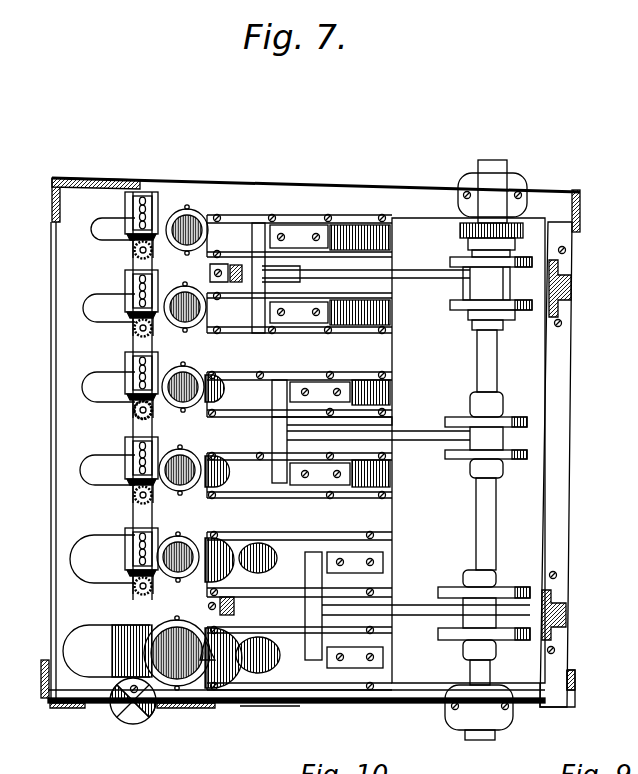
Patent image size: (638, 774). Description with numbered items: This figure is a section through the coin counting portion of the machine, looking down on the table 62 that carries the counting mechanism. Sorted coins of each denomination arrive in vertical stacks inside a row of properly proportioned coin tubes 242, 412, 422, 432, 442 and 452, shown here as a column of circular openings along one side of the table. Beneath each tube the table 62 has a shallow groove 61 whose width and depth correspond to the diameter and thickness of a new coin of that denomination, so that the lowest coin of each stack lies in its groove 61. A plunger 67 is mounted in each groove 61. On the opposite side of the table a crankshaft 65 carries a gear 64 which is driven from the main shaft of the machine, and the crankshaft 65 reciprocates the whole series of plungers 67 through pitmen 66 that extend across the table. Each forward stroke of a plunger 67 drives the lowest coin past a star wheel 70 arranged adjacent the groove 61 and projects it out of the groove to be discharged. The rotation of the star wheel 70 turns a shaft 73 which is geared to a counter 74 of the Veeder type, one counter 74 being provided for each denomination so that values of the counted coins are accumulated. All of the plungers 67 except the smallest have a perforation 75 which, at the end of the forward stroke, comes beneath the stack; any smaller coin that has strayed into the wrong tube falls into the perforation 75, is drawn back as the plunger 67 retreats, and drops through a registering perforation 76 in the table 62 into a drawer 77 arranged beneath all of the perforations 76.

The table 62 is at (66, 603).
The gear 64 is at (460, 231).
The crankshaft 65 is at (497, 364).
The pitmen 66 is at (412, 282).
The groove 61 is at (390, 325).
The plunger 67 is at (246, 224).
The star wheel 70 is at (128, 692).
The shaft 73 is at (134, 418).
The counter 74 is at (141, 192).
The perforation 75 is at (222, 385).
The perforation 76 is at (208, 643).
The drawer 77 is at (268, 708).
The coin tube 242 is at (150, 658).
The coin tube 412 is at (200, 545).
The coin tube 422 is at (186, 462).
The coin tube 432 is at (188, 380).
The coin tube 442 is at (188, 300).
The coin tube 452 is at (190, 222).